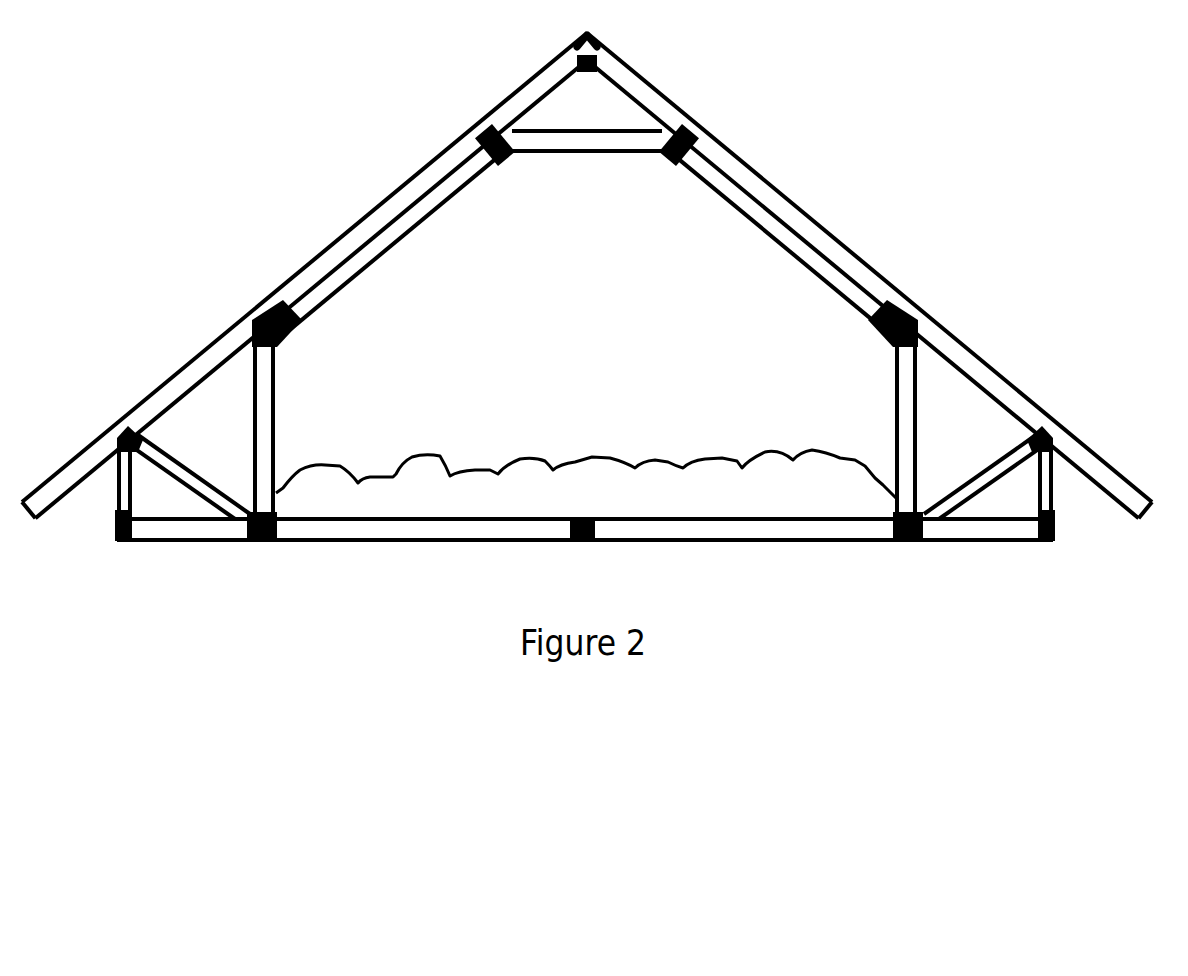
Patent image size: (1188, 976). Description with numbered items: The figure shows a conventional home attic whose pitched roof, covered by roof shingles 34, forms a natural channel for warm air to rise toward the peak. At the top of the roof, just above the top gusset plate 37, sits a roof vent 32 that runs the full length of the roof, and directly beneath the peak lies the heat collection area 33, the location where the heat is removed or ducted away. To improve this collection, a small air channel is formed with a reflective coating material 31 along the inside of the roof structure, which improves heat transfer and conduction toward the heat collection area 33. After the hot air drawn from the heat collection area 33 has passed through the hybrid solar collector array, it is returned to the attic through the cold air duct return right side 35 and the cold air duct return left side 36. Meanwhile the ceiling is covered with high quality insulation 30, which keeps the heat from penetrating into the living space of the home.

The insulation 30 is at (551, 453).
The reflective coating & air channel 31 is at (372, 232).
The roof vent 32 is at (606, 37).
The heat collection area 33 is at (602, 111).
The roof shingles 34 is at (900, 283).
The cold air duct return right side 35 is at (949, 440).
The cold air duct return left side 36 is at (227, 440).
The top gusset plate 37 is at (568, 61).